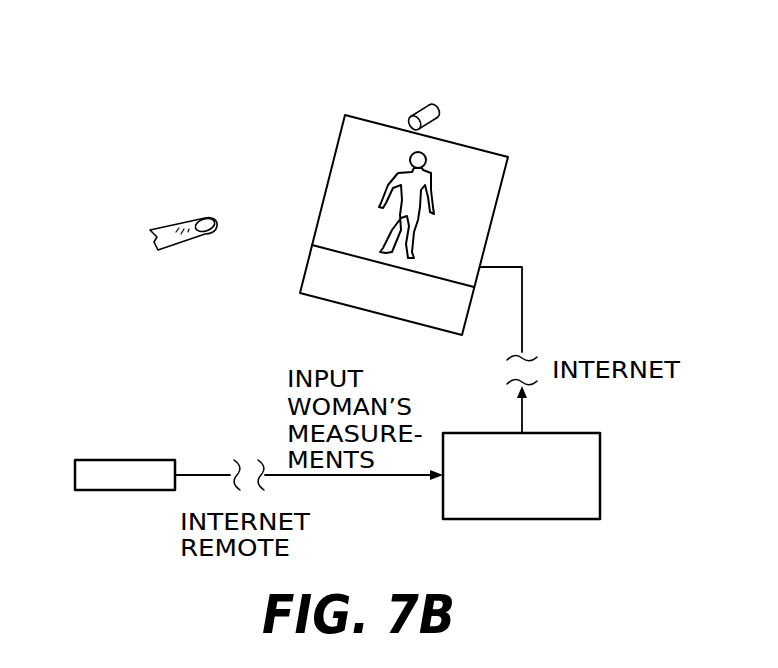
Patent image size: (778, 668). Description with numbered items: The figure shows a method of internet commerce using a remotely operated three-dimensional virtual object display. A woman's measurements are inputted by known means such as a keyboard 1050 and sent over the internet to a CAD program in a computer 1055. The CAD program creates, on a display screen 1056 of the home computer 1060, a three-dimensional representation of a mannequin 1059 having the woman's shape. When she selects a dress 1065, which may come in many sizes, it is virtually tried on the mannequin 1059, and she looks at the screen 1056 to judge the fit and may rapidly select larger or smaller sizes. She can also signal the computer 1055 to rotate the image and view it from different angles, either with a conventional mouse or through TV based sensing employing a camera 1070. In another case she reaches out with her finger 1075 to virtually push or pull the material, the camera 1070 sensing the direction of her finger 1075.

The keyboard 1050 is at (100, 490).
The computer 1055 is at (600, 470).
The display screen 1056 is at (507, 167).
The mannequin 1059 is at (432, 146).
The home computer 1060 is at (331, 310).
The dress 1065 is at (403, 190).
The camera 1070 is at (417, 109).
The finger 1075 is at (197, 218).